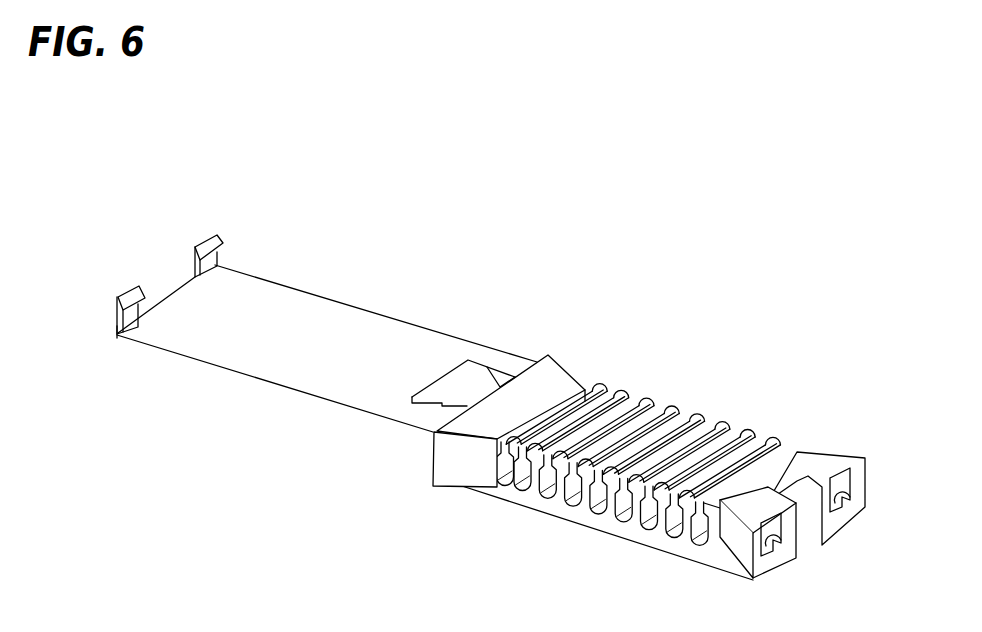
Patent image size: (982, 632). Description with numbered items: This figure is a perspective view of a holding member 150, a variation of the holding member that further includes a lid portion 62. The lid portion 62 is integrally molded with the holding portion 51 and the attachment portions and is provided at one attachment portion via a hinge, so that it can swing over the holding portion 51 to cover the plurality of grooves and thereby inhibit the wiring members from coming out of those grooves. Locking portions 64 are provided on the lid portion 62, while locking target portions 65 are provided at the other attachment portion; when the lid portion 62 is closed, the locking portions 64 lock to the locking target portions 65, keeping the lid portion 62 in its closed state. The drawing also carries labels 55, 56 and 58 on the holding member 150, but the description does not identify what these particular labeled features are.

The holding member 150 is at (300, 142).
The holding portion 51 is at (590, 534).
The first end block 55 is at (550, 370).
The second end block 56 is at (842, 463).
The projecting tab 58 is at (488, 366).
The lid portion 62 is at (286, 364).
The locking portions 64 is at (131, 287).
The locking target portions 65 is at (775, 548).